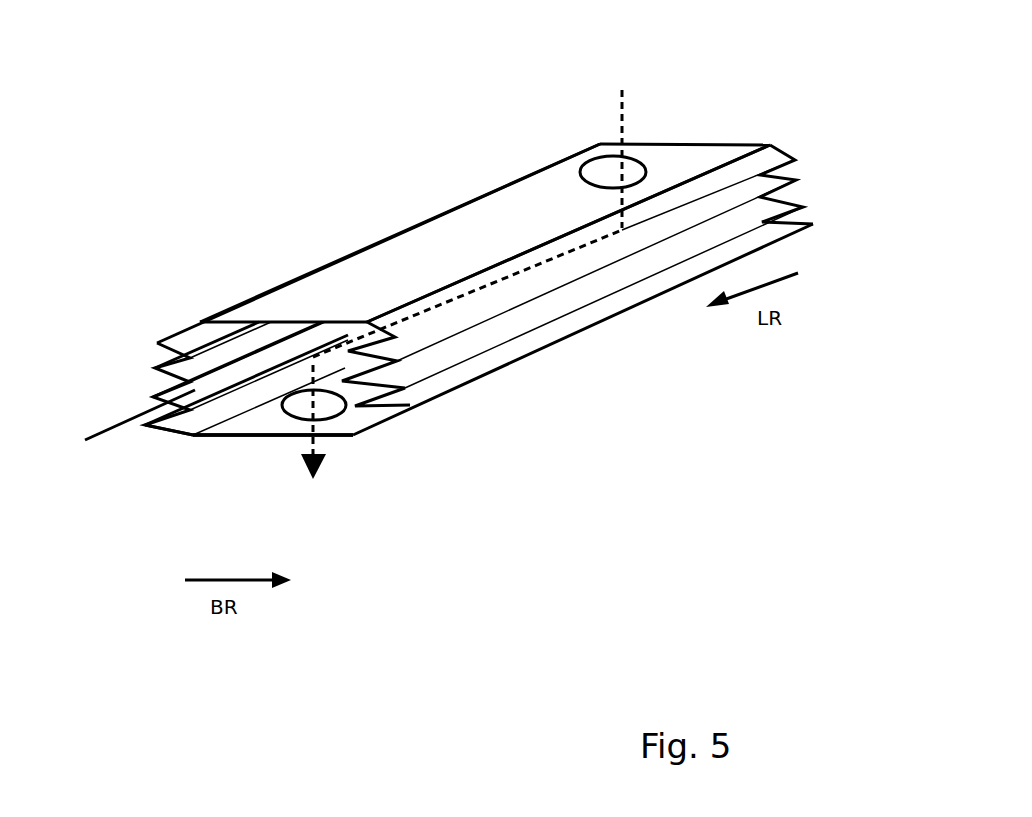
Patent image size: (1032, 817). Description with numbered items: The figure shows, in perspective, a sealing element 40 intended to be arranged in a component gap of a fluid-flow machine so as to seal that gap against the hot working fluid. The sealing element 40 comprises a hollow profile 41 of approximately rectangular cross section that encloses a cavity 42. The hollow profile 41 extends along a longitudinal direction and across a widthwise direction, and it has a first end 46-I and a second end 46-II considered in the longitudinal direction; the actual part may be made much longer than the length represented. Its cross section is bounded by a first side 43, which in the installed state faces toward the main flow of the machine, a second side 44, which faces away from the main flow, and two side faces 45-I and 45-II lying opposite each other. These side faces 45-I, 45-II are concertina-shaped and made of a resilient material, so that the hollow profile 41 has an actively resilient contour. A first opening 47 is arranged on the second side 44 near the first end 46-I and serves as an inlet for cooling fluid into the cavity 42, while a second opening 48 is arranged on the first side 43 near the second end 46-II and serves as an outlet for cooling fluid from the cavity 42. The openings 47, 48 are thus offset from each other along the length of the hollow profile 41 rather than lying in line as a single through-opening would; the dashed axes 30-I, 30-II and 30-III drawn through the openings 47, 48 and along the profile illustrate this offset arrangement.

The sealing element 40 is at (318, 126).
The hollow profile 41 is at (337, 282).
The cavity 42 is at (192, 428).
The first side 43 is at (238, 437).
The second side 44 is at (447, 267).
The first side face 45-I is at (518, 322).
The second side face 45-II is at (165, 356).
The first end 46-I is at (805, 120).
The second end 46-II is at (143, 473).
The first opening 47 is at (600, 167).
The second opening 48 is at (303, 420).
The first axis 30-I is at (627, 108).
The second axis 30-II is at (508, 280).
The third axis 30-III is at (333, 465).